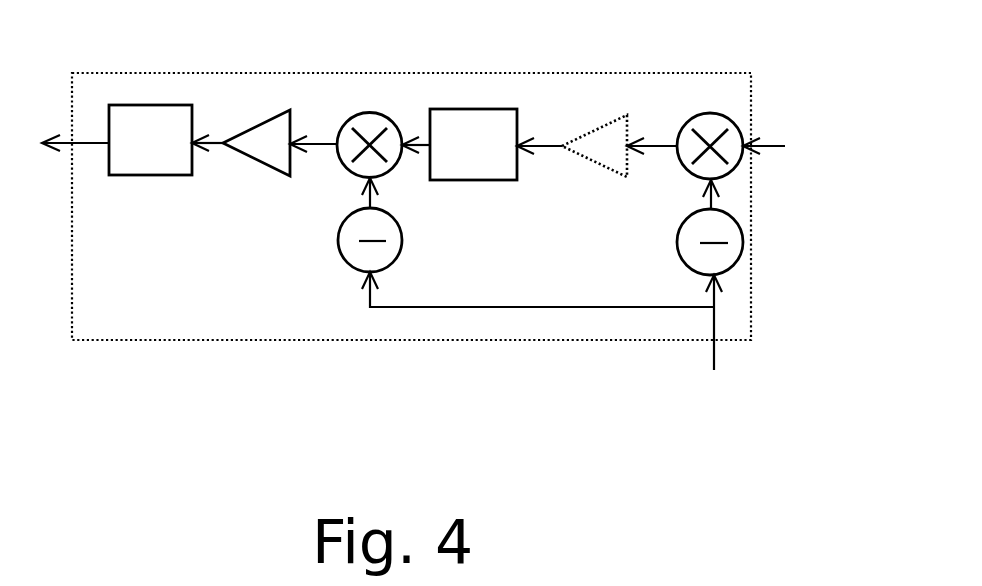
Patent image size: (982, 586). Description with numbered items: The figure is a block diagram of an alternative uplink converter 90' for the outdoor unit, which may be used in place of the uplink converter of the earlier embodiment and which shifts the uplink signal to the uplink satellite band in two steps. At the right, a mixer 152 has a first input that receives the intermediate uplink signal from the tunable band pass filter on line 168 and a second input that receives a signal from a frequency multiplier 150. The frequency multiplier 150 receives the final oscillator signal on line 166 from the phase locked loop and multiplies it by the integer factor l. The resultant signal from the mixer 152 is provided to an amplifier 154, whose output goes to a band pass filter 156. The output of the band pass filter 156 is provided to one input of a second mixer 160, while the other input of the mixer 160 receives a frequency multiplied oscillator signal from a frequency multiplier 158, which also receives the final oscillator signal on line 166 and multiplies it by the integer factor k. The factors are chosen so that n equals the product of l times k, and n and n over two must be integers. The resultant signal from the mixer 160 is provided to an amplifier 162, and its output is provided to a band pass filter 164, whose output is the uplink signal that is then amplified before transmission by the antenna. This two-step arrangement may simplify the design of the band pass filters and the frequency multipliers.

The alternative uplink converter 90' is at (411, 170).
The frequency multiplier 150 is at (737, 232).
The mixer 152 is at (710, 132).
The amplifier 154 is at (605, 152).
The band pass filter 156 is at (470, 168).
The frequency multiplier 158 is at (343, 257).
The mixer 160 is at (368, 127).
The amplifier 162 is at (267, 145).
The band pass filter 164 is at (148, 163).
The line 166 is at (715, 352).
The line 168 is at (775, 138).